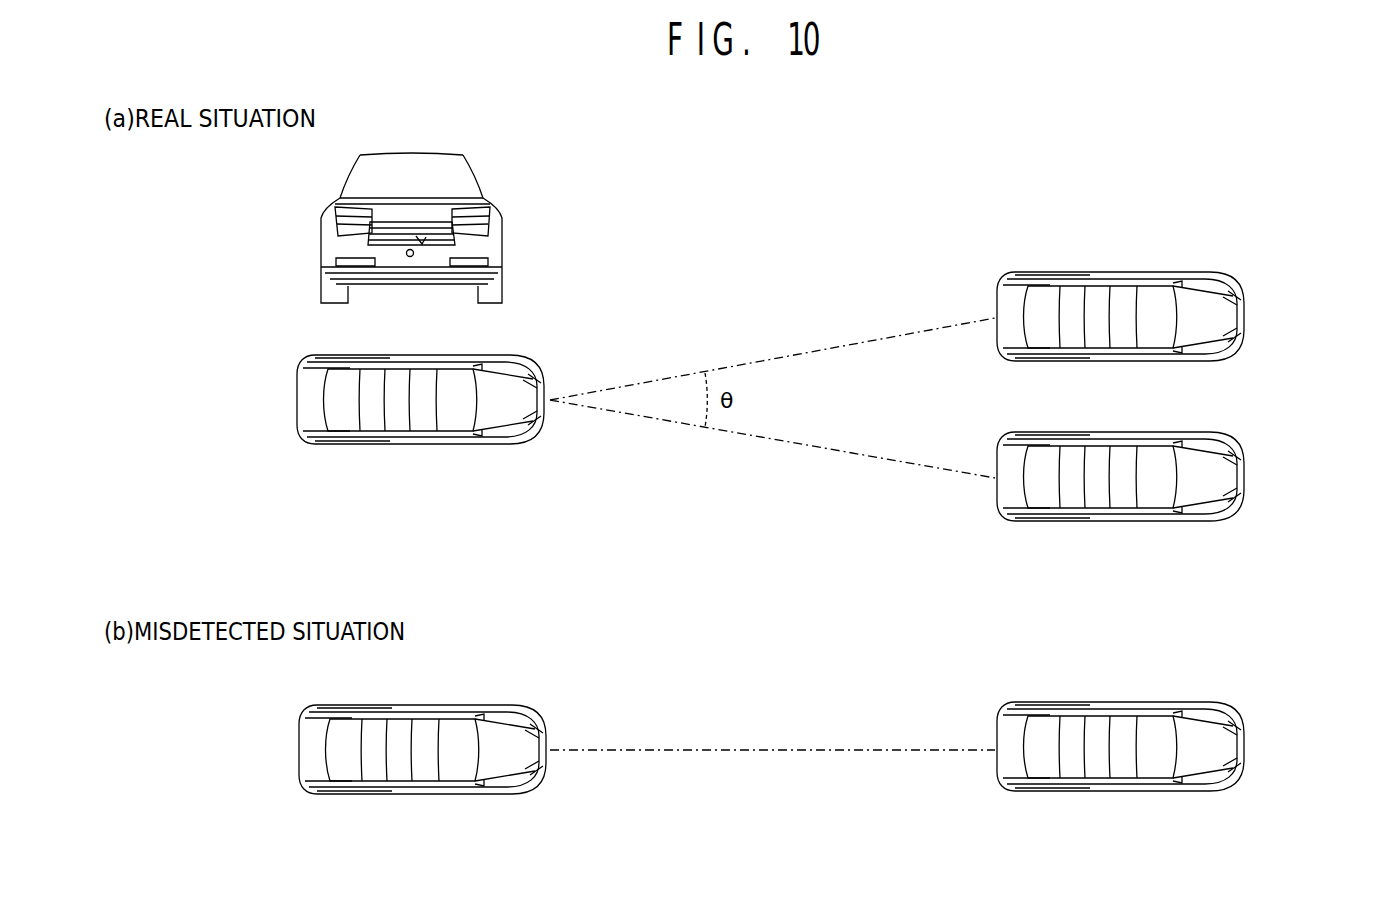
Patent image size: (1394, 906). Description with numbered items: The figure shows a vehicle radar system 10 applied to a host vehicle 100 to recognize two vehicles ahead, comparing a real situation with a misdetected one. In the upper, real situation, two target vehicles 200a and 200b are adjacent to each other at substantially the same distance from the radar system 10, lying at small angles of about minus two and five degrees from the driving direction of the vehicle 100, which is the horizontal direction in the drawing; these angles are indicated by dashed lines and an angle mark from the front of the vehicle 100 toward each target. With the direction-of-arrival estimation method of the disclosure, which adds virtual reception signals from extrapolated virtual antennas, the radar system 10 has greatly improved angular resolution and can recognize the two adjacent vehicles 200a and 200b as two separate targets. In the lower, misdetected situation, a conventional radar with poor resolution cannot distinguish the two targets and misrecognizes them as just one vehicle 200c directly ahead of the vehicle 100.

The radar system 10 is at (422, 242).
The vehicle 100 is at (518, 265).
The target vehicle 200a is at (1266, 312).
The target vehicle 200b is at (1266, 474).
The misdetected target vehicle 200c is at (1266, 738).